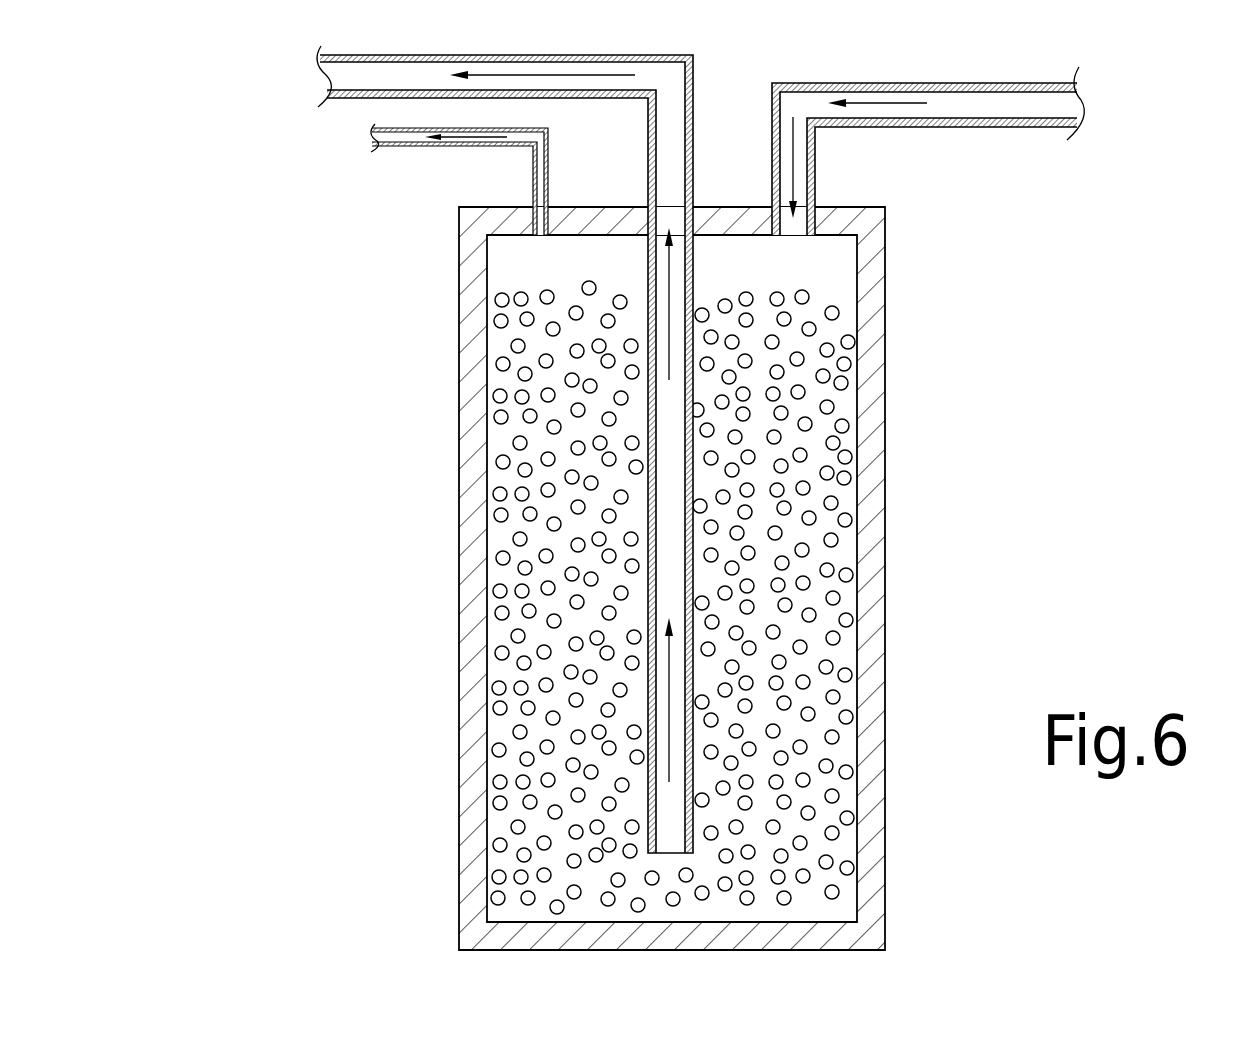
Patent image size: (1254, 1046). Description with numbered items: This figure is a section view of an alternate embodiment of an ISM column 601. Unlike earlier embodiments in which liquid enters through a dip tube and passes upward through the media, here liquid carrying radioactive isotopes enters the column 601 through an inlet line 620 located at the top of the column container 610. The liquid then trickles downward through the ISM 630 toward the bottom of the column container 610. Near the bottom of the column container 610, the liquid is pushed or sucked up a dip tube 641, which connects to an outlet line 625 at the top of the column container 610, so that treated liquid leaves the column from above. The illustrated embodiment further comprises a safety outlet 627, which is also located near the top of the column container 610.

The column 601 is at (343, 434).
The column container 610 is at (872, 570).
The inlet line 620 is at (1013, 128).
The outlet line 625 is at (357, 100).
The safety outlet 627 is at (405, 147).
The ISM 630 is at (578, 722).
The dip tube 641 is at (693, 453).